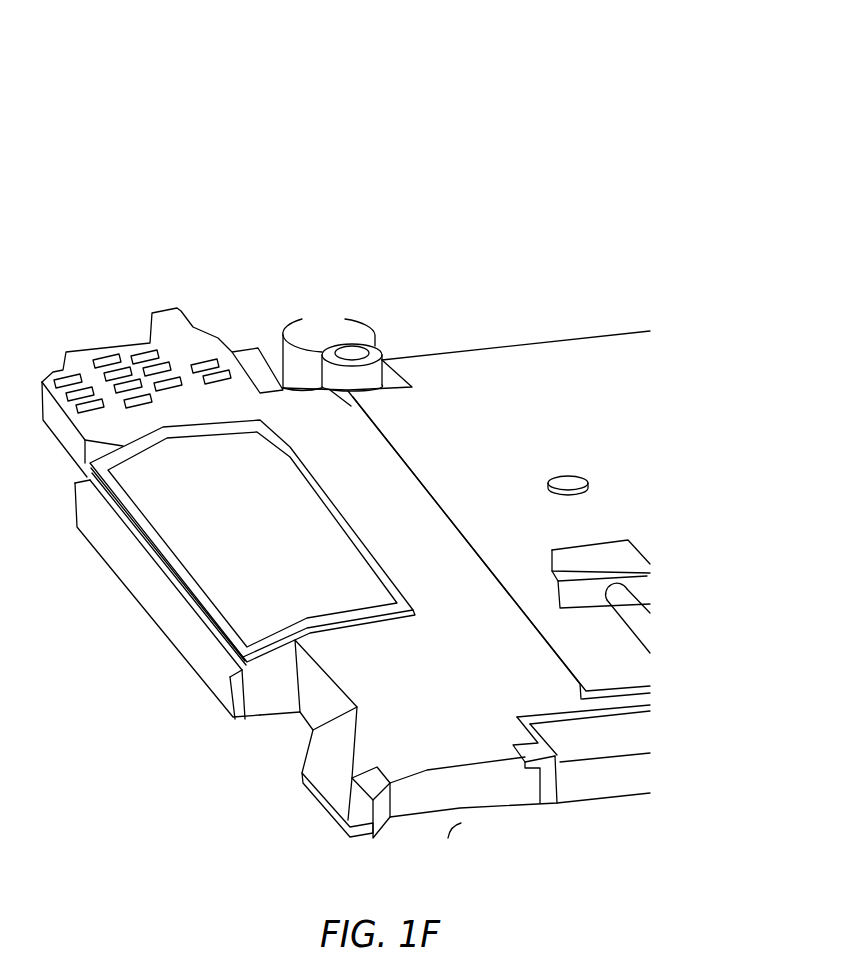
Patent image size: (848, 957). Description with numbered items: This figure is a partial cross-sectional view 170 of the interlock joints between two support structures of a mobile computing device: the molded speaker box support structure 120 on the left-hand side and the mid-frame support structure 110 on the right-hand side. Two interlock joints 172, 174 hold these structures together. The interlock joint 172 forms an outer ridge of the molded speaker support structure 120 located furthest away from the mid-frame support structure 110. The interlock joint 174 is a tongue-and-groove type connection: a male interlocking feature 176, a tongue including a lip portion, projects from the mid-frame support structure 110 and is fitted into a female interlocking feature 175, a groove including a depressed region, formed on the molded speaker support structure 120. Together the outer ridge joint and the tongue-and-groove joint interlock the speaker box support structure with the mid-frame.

The partial cross-sectional view 170 is at (612, 148).
The mid-frame support structure 110 is at (502, 317).
The molded speaker box support structure 120 is at (122, 315).
The interlock joint 172 is at (335, 755).
The interlock joint 174 is at (565, 775).
The female interlocking feature 175 is at (523, 783).
The male interlocking feature 176 is at (538, 762).